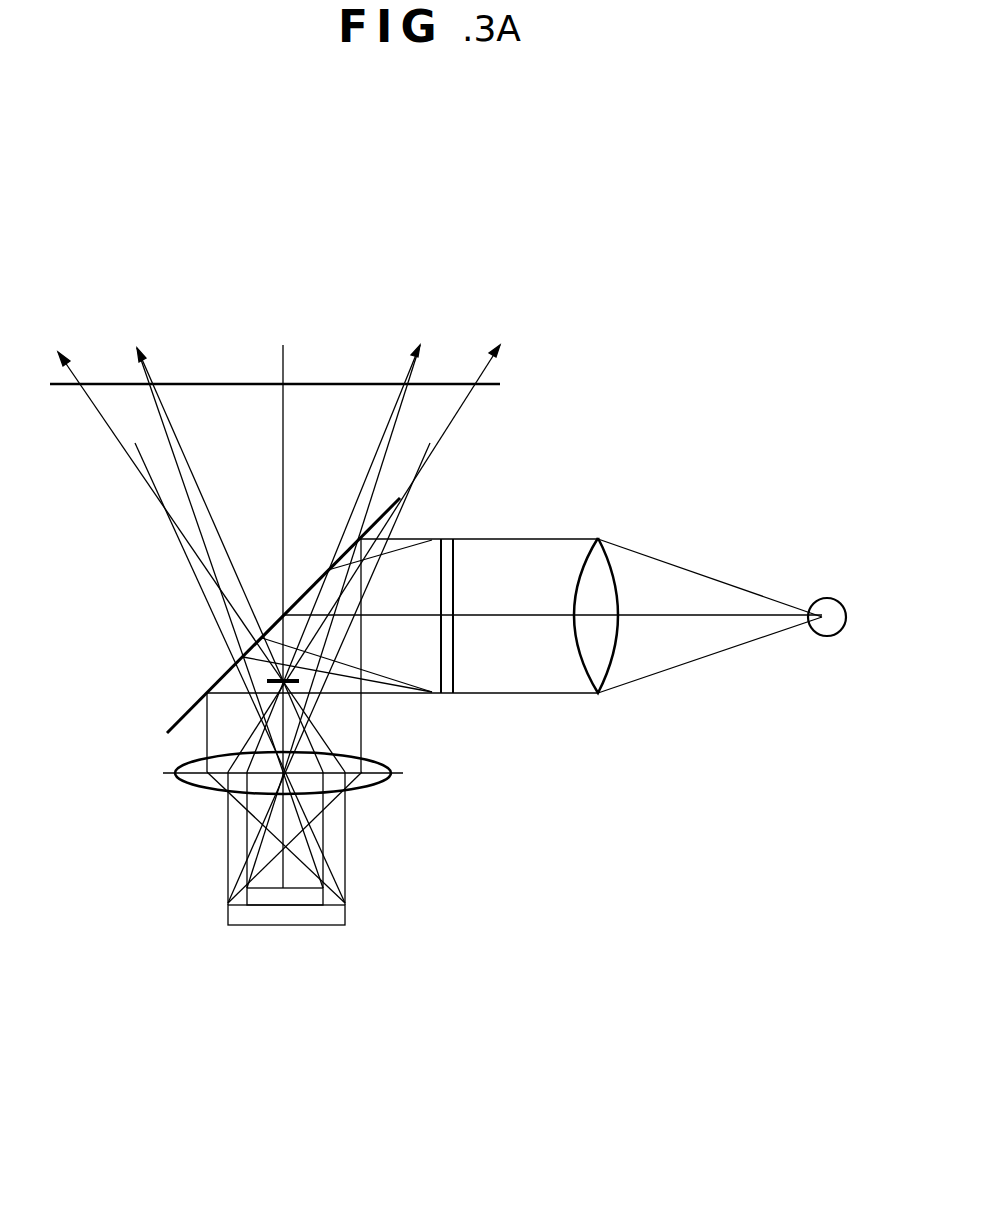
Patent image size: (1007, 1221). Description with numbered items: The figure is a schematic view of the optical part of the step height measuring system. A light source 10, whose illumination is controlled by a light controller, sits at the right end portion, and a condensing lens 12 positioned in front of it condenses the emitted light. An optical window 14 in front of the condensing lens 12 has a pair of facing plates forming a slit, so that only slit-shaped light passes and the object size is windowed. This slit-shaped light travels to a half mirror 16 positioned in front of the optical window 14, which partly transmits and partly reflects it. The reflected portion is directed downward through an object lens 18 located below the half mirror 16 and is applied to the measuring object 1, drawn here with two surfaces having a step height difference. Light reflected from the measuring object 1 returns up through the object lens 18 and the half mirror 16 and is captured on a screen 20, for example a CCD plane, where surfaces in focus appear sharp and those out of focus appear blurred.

The measuring object 1 is at (290, 918).
The light source 10 is at (837, 598).
The condensing lens 12 is at (600, 538).
The optical window 14 is at (446, 539).
The half mirror 16 is at (217, 681).
The object lens 18 is at (185, 782).
The screen 20 is at (207, 383).